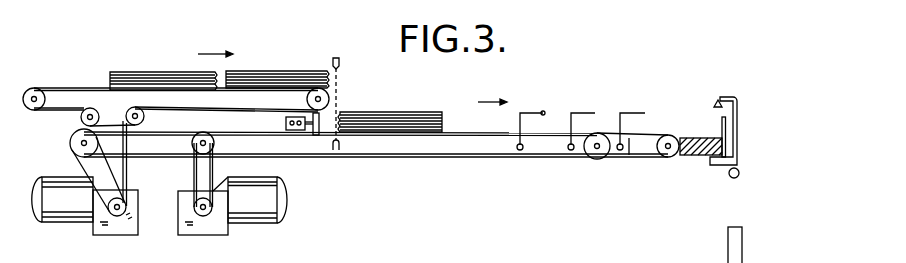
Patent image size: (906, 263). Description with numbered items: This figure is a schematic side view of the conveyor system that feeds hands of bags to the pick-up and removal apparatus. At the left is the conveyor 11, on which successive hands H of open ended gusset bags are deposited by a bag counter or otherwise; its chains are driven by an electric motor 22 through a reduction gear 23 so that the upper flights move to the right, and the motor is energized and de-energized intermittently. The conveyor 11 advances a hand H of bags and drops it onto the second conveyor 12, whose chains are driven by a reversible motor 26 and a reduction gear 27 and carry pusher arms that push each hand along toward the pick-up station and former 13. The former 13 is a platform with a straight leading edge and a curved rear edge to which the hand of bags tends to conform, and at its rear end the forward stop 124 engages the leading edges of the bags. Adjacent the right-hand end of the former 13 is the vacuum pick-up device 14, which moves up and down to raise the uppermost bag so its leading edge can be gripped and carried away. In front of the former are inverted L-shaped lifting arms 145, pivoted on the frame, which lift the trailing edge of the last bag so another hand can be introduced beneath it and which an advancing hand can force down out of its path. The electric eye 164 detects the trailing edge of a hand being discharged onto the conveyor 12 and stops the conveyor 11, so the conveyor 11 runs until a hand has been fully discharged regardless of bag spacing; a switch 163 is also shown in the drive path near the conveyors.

The conveyor 11 is at (82, 84).
The second conveyor 12 is at (486, 126).
The pick-up station and former 13 is at (697, 151).
The vacuum pick-up device 14 is at (745, 80).
The electric motor 22 is at (73, 214).
The reduction gear 23 is at (120, 228).
The reversible motor 26 is at (270, 200).
The reduction gear 27 is at (207, 227).
The forward stop 124 is at (721, 122).
The lifting arms 145 is at (630, 113).
The switch 163 is at (316, 136).
The electric eye 164 is at (327, 92).
The hand of bags H is at (265, 71).